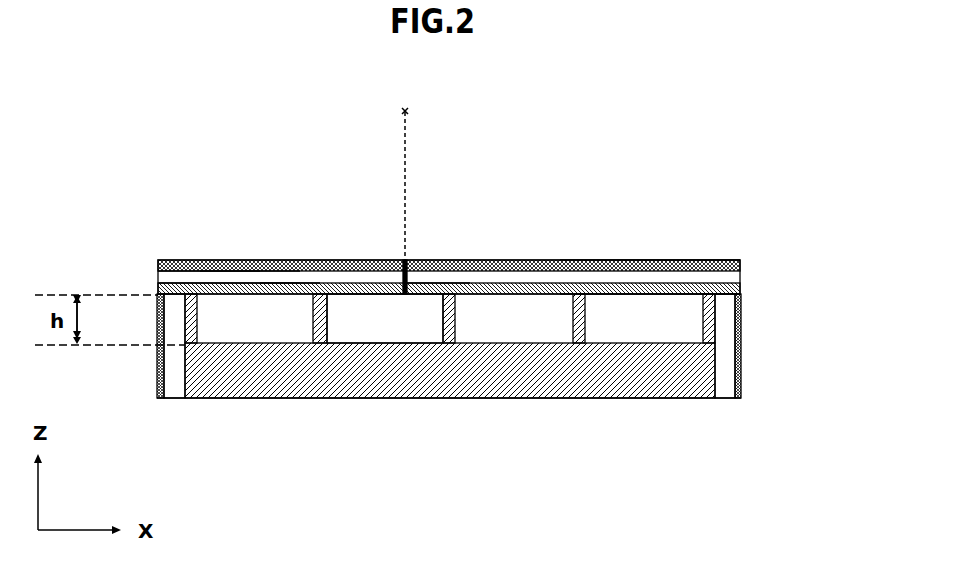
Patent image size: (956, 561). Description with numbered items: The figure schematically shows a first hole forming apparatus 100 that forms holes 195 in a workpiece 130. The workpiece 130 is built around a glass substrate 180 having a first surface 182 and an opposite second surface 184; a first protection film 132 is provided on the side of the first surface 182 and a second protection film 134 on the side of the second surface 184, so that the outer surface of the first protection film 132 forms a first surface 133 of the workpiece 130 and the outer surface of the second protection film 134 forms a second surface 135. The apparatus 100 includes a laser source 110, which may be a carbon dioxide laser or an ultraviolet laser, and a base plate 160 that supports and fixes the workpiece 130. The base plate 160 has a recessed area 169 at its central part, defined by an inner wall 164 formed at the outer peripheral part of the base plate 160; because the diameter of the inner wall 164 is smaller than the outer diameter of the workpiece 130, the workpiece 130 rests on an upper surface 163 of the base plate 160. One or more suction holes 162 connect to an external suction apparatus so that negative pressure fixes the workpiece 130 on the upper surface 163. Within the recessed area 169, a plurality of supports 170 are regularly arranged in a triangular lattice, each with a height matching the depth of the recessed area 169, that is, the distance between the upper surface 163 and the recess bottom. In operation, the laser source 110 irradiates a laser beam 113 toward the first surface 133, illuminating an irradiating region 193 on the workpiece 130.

The first hole forming apparatus 100 is at (648, 106).
The laser source 110 is at (408, 111).
The laser beam 113 is at (408, 158).
The workpiece 130 is at (746, 278).
The first protection film 132 is at (158, 270).
The first surface of the workpiece 133 is at (688, 260).
The second protection film 134 is at (158, 289).
The second surface of the workpiece 135 is at (604, 294).
The base plate 160 is at (742, 370).
The suction hole 162 is at (172, 390).
The upper surface of the base plate 163 is at (738, 312).
The inner wall 164 is at (201, 391).
The recessed area 169 is at (413, 332).
The supports 170 is at (325, 331).
The glass substrate 180 is at (158, 275).
The first surface of the glass substrate 182 is at (236, 273).
The second surface of the glass substrate 184 is at (290, 289).
The irradiating region 193 is at (400, 255).
The holes 195 is at (408, 285).